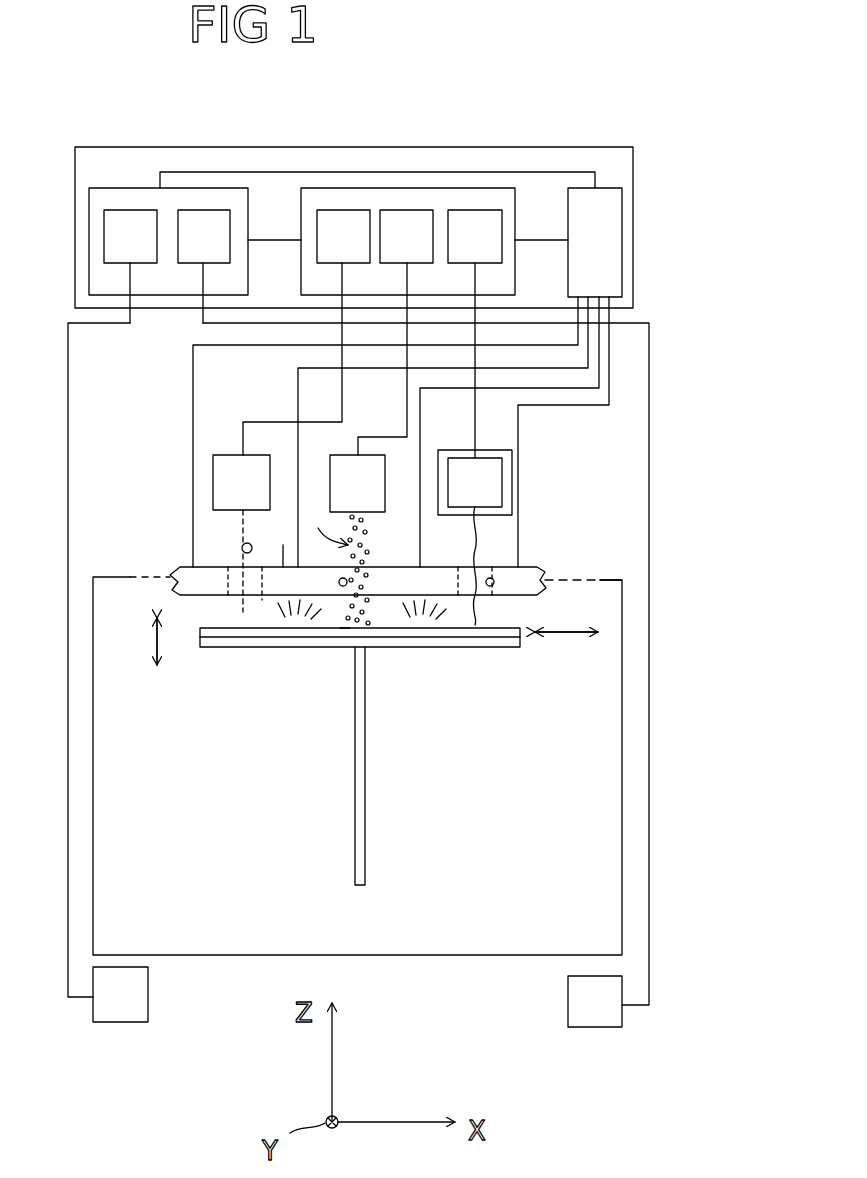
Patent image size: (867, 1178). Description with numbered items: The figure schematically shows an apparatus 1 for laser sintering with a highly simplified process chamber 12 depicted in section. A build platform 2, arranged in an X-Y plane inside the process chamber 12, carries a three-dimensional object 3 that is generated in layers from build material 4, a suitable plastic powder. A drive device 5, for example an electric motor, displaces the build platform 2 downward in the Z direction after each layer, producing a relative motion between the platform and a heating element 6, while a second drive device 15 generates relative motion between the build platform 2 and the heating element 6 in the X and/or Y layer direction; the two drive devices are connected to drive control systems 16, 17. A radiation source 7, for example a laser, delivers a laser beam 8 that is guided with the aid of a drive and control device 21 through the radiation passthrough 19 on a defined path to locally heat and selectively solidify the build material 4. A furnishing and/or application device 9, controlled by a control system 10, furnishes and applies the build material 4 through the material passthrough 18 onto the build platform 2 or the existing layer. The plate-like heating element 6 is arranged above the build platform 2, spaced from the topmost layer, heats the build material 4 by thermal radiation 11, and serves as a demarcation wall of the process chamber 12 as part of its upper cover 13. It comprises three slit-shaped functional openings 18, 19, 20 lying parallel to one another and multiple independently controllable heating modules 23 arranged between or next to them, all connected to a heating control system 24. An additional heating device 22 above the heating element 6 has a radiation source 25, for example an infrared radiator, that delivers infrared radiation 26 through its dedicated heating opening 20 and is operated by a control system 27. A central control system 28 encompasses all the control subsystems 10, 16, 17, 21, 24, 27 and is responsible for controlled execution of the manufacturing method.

The apparatus 1 is at (568, 100).
The build platform 2 is at (410, 648).
The three-dimensional object 3 is at (230, 620).
The build material 4 is at (325, 522).
The drive device 5 is at (118, 1022).
The heating element 6 is at (535, 565).
The radiation source 7 is at (213, 478).
The laser beam 8 is at (240, 547).
The furnishing and/or application device 9 is at (368, 503).
The control system 10 is at (407, 210).
The thermal radiation 11 is at (277, 608).
The process chamber 12 is at (458, 925).
The upper cover 13 is at (612, 578).
The drive device 15 is at (593, 1027).
The drive control system 16 is at (130, 210).
The drive control system 17 is at (203, 210).
The material passthrough 18 is at (337, 653).
The radiation passthrough 19 is at (233, 586).
The functional opening 20 is at (496, 583).
The drive and control device 21 is at (342, 210).
The additional heating device 22 is at (445, 452).
The heating modules 23 is at (283, 567).
The heating control system 24 is at (620, 255).
The radiation source 25 is at (505, 472).
The infrared radiation 26 is at (472, 553).
The control system 27 is at (475, 210).
The central control system 28 is at (633, 160).